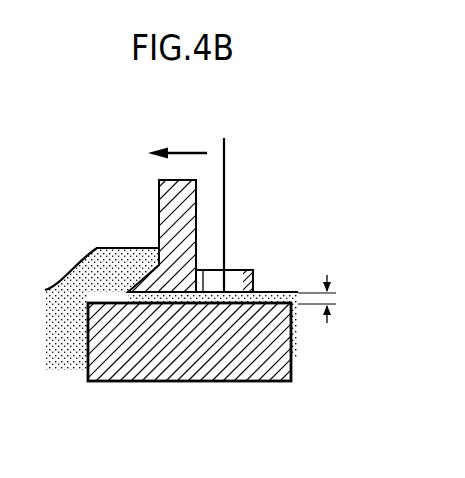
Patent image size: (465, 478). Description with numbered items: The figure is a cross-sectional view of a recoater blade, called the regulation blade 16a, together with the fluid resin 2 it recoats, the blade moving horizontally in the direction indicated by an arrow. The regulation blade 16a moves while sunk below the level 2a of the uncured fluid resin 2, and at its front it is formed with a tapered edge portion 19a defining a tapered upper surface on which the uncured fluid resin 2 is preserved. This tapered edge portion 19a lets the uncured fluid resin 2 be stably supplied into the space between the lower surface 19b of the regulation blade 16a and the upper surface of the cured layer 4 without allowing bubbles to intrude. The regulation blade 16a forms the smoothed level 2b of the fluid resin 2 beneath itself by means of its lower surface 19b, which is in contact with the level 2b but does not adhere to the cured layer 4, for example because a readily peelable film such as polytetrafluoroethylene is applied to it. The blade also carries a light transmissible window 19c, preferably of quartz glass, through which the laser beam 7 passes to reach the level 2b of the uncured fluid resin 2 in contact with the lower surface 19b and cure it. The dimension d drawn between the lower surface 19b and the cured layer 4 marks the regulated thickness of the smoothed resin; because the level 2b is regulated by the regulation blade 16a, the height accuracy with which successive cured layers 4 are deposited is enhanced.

The regulation blade 16a is at (164, 205).
The laser beam 7 is at (225, 167).
The light transmissible window 19c is at (234, 284).
The level of the fluid resin 2b is at (242, 291).
The level of the uncured fluid resin 2a is at (41, 284).
The fluid resin 2 is at (100, 258).
The tapered edge portion 19a is at (143, 293).
The lower surface 19b is at (178, 296).
The cured layer 4 is at (292, 382).
The gap distance d is at (328, 299).